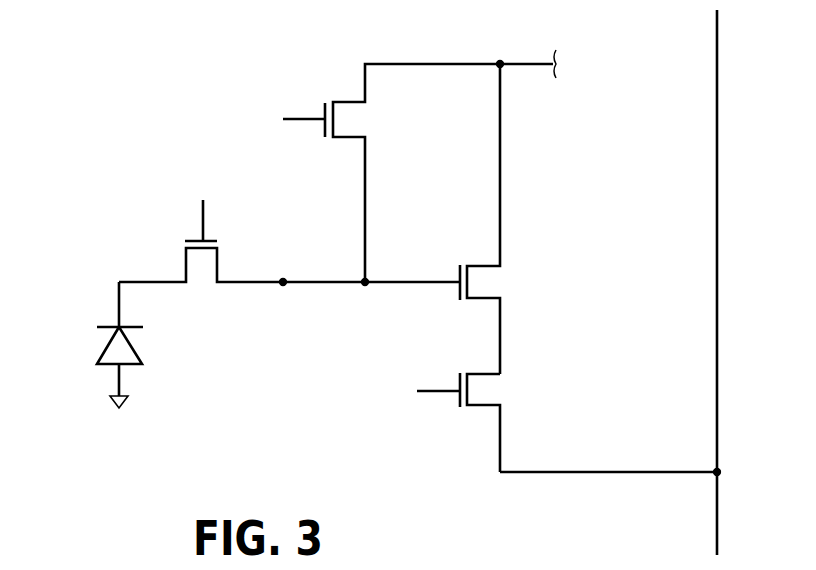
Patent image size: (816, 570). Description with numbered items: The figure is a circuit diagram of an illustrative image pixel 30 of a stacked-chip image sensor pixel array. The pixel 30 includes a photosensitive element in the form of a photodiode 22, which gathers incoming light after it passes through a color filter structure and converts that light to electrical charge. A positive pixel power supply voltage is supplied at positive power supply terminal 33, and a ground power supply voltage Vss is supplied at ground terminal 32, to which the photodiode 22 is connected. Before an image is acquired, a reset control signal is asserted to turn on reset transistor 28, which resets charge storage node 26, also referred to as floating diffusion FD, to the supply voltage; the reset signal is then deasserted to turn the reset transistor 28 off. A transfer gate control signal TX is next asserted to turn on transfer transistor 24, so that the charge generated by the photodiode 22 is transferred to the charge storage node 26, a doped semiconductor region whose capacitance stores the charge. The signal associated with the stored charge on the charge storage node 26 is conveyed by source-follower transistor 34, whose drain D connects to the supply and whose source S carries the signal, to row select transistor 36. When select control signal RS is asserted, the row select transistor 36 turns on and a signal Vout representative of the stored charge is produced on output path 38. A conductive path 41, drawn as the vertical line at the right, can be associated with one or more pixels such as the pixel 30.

The image pixel 30 is at (173, 58).
The photodiode 22 is at (114, 348).
The transfer transistor 24 is at (190, 266).
The charge storage node 26 is at (283, 279).
The reset transistor 28 is at (348, 106).
The ground terminal 32 is at (113, 400).
The positive power supply terminal 33 is at (535, 62).
The source-follower transistor 34 is at (483, 268).
The row select transistor 36 is at (485, 404).
The output path 38 is at (600, 475).
The conductive path 41 is at (718, 320).